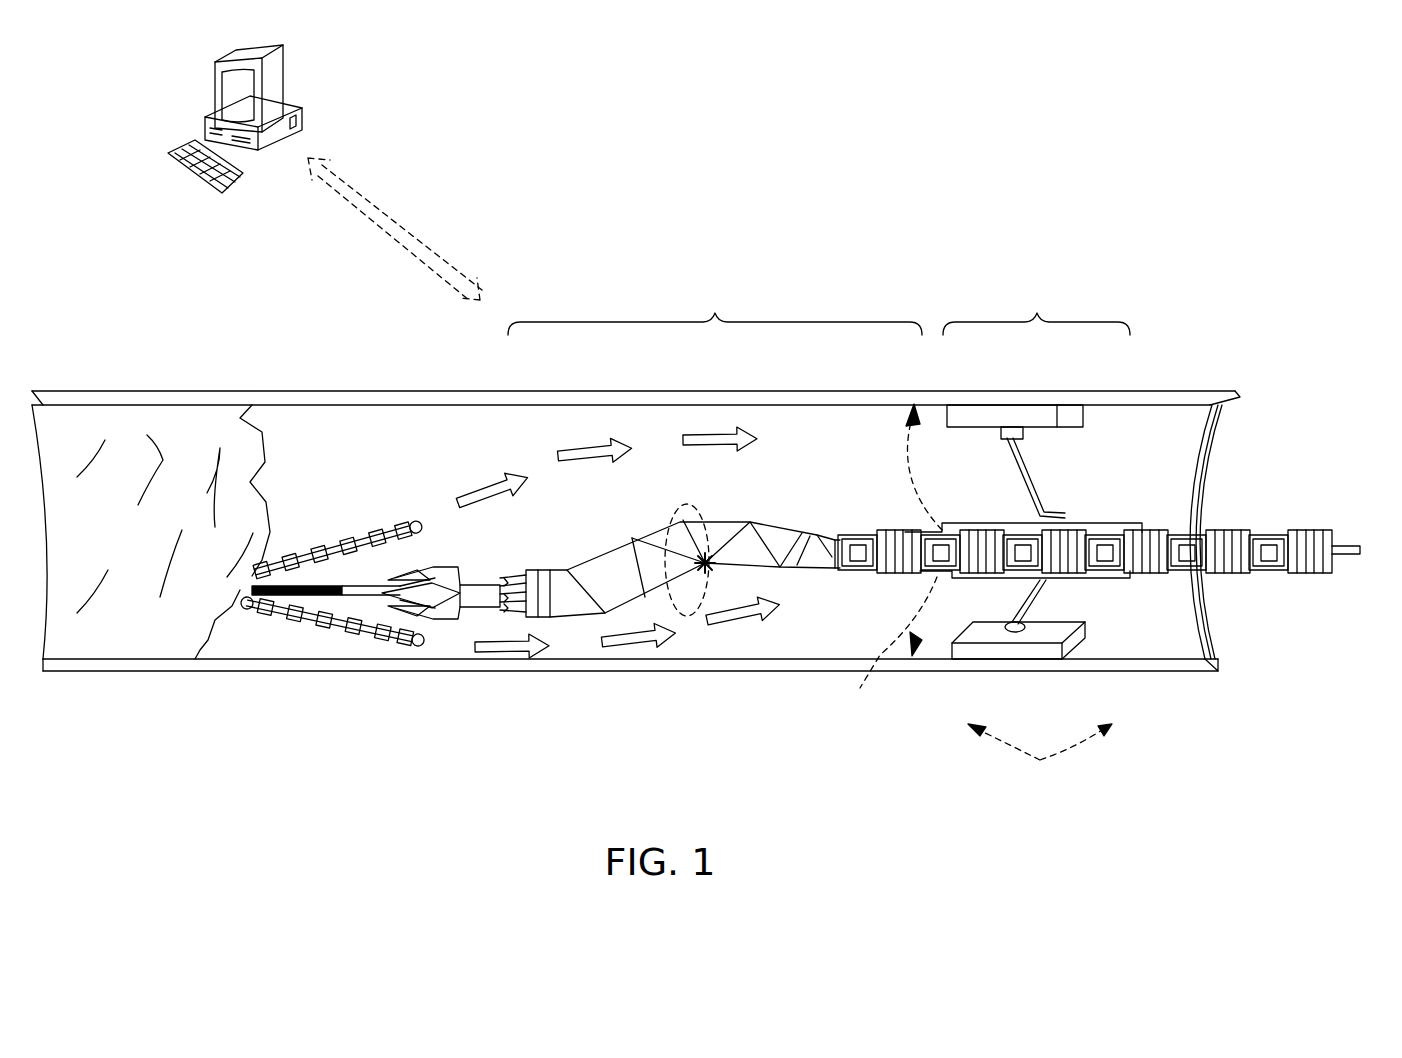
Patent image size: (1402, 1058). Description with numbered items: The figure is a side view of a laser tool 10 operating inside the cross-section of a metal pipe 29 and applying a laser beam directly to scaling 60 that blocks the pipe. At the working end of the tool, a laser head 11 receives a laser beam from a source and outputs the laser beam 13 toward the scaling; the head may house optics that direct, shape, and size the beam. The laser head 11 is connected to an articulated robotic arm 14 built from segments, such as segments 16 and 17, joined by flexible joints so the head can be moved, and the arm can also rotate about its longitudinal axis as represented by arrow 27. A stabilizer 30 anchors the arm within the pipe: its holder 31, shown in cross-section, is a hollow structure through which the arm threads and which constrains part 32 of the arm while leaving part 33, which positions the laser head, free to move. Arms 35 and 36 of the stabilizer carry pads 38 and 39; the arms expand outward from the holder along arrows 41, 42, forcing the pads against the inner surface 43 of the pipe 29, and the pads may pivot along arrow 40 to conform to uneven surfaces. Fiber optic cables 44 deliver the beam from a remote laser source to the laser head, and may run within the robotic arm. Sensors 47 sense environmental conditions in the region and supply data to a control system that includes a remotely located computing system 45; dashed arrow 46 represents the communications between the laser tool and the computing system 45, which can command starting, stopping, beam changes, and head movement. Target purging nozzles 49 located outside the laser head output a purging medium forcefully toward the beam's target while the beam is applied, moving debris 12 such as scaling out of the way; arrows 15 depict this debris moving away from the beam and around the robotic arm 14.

The laser tool 10 is at (792, 502).
The laser head 11 is at (443, 610).
The debris 12 is at (320, 586).
The laser beam 13 is at (330, 577).
The robotic arm 14 is at (567, 570).
The arrows 15 is at (573, 465).
The segment 16 is at (768, 537).
The segment 17 is at (810, 557).
The arrow 27 is at (690, 615).
The pipe 29 is at (228, 398).
The stabilizer 30 is at (1073, 502).
The holder 31 is at (1107, 580).
The part of robotic arm 32 is at (1037, 313).
The part of robotic arm 33 is at (715, 313).
The arm 35 is at (1022, 470).
The arm 36 is at (1025, 610).
The pad 38 is at (1035, 413).
The pad 39 is at (1033, 650).
The arrow 40 is at (1040, 762).
The arrow 41 is at (895, 440).
The arrow 42 is at (892, 647).
The inner surface 43 is at (1148, 407).
The fiber optic cables 44 is at (1347, 553).
The computing system 45 is at (283, 102).
The dashed arrow 46 is at (398, 226).
The sensors 47 is at (483, 591).
The target purging nozzles 49 is at (400, 615).
The scaling 60 is at (92, 418).